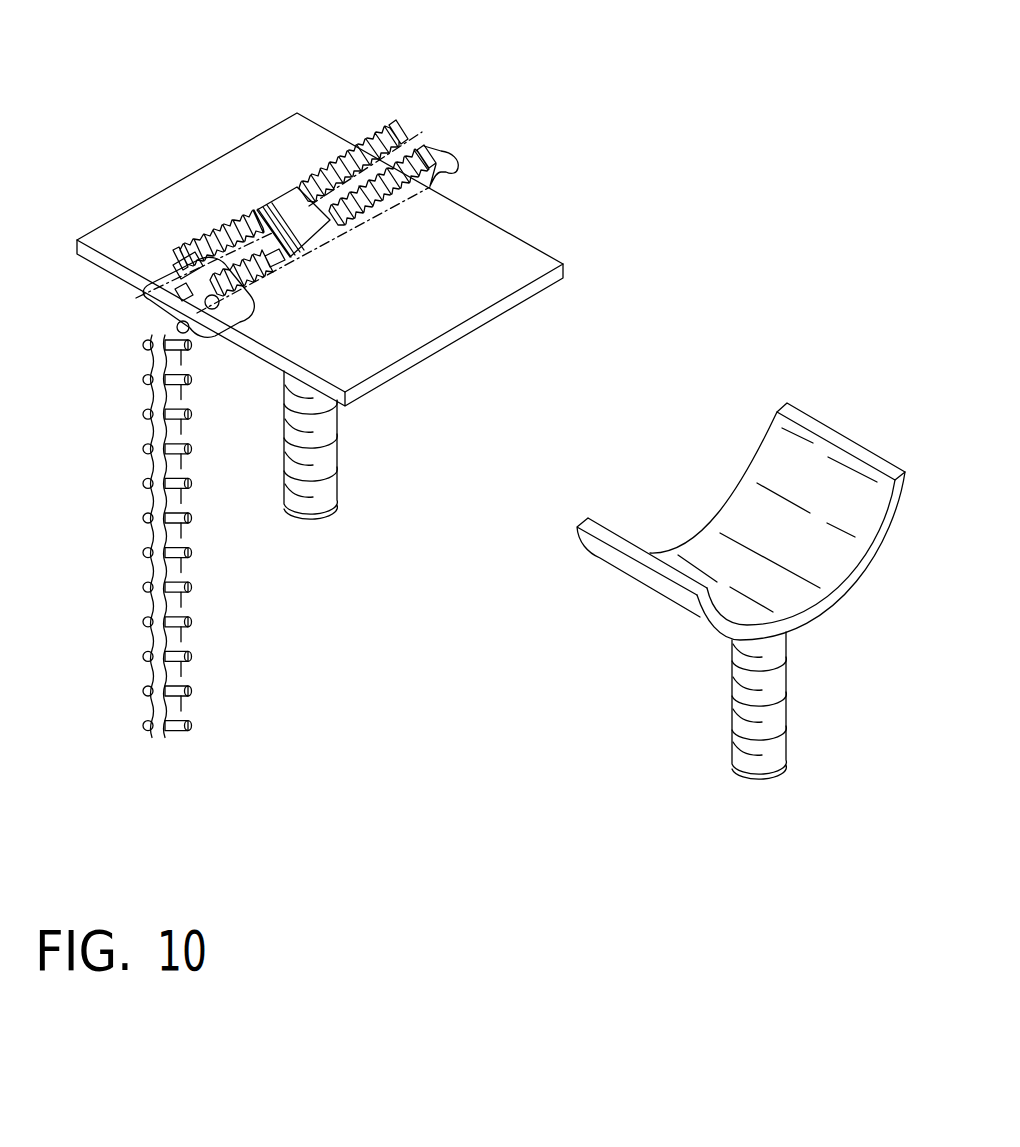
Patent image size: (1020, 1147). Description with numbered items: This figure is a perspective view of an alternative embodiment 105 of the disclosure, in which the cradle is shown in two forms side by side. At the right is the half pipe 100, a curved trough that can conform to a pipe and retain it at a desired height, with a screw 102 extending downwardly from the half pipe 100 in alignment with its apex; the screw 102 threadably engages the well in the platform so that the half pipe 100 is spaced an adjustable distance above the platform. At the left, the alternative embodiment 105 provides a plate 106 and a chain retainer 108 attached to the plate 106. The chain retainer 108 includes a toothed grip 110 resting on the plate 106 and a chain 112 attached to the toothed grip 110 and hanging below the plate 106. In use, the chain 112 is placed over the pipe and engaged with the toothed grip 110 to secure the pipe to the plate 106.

The half pipe 100 is at (840, 430).
The screw 102 is at (732, 680).
The alternative embodiment 105 is at (700, 200).
The plate 106 is at (558, 262).
The chain retainer 108 is at (250, 185).
The toothed grip 110 is at (366, 133).
The chain 112 is at (158, 577).